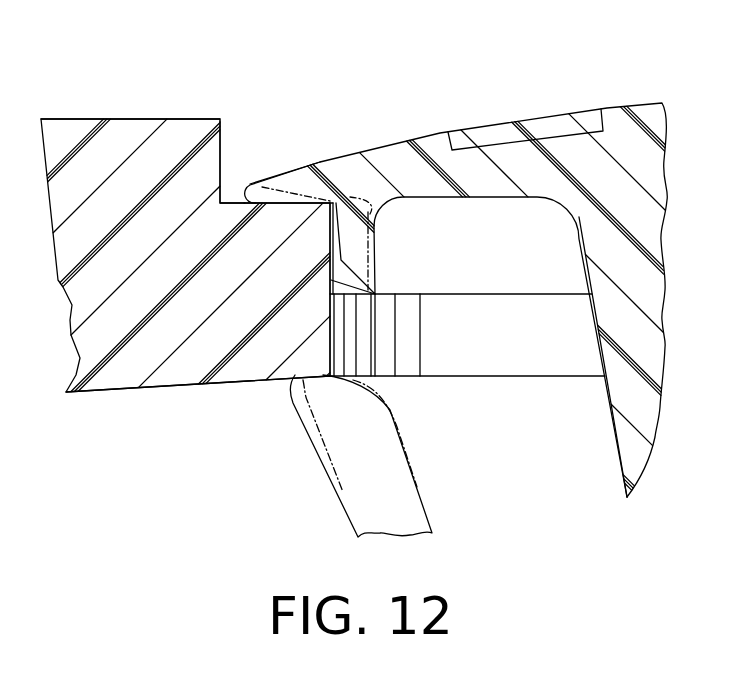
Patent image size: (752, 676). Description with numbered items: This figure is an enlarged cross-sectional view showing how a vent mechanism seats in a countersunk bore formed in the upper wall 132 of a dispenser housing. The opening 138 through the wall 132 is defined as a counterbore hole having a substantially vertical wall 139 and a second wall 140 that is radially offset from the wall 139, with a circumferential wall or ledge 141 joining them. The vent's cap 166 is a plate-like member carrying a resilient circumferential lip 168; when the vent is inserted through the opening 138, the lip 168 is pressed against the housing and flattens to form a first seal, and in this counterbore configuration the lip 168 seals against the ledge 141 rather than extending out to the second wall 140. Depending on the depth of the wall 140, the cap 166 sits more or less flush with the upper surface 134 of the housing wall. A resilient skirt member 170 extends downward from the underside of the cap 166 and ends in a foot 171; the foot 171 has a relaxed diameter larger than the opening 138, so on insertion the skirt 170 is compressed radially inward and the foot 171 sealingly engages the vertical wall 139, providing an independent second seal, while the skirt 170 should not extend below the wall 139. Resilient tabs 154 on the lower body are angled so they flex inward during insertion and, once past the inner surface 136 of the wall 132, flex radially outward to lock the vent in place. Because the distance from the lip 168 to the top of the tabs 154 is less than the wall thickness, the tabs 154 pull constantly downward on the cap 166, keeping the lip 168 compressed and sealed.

The upper wall 132 is at (138, 176).
The upper surface 134 is at (99, 118).
The inner surface 136 is at (102, 394).
The opening 138 is at (531, 347).
The vertical wall 139 is at (333, 320).
The second wall 140 is at (233, 201).
The ledge 141 is at (243, 194).
The resilient tabs 154 is at (393, 470).
The cap 166 is at (613, 108).
The resilient circumferential lip 168 is at (298, 183).
The resilient skirt member 170 is at (357, 237).
The foot 171 is at (328, 282).